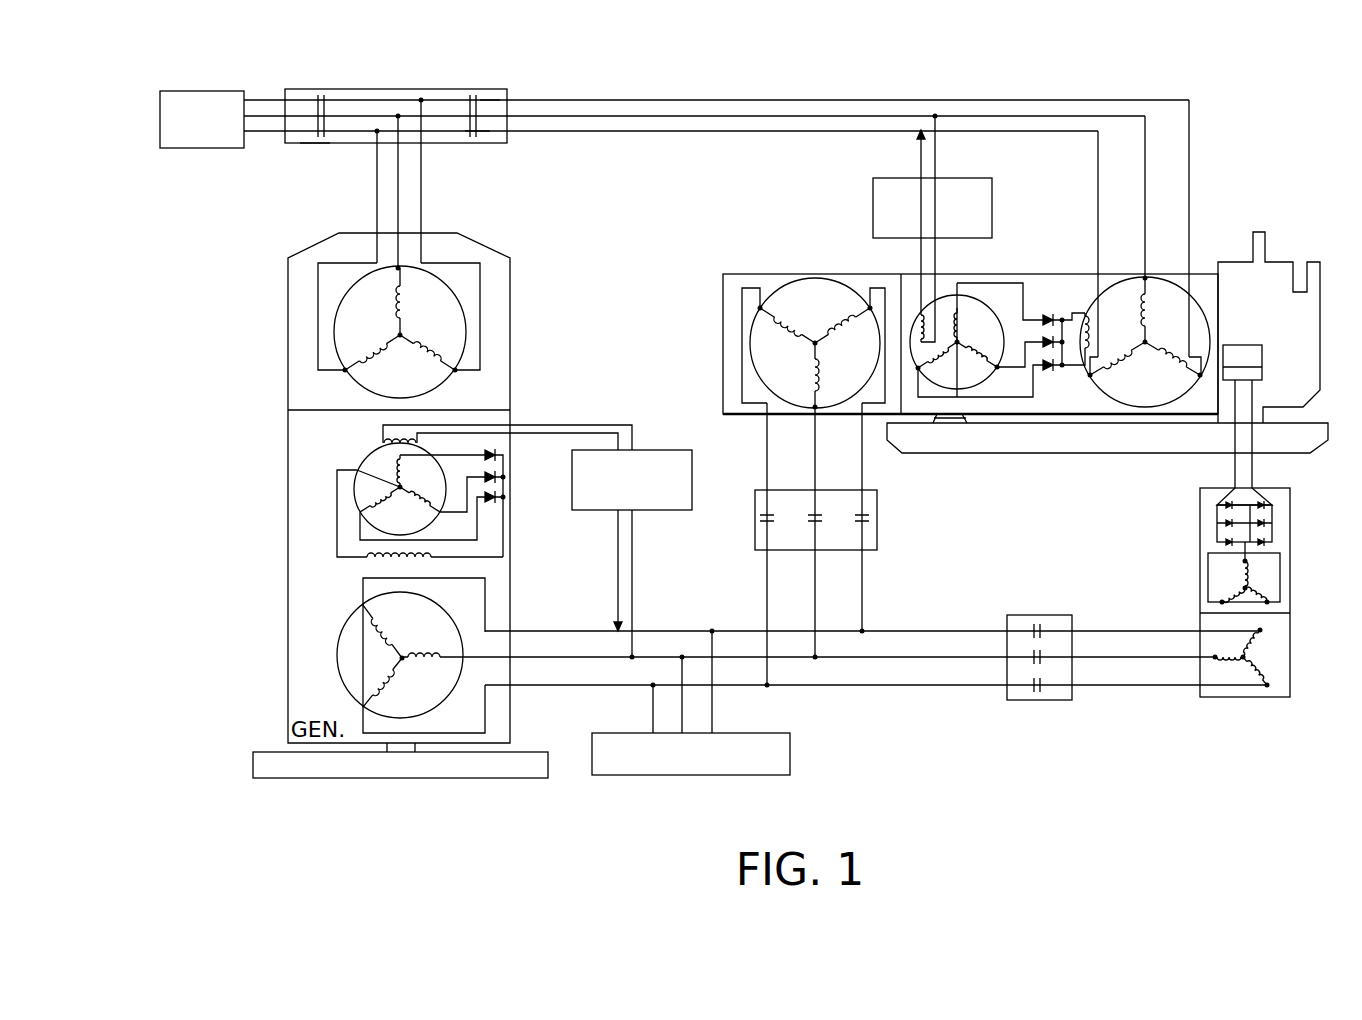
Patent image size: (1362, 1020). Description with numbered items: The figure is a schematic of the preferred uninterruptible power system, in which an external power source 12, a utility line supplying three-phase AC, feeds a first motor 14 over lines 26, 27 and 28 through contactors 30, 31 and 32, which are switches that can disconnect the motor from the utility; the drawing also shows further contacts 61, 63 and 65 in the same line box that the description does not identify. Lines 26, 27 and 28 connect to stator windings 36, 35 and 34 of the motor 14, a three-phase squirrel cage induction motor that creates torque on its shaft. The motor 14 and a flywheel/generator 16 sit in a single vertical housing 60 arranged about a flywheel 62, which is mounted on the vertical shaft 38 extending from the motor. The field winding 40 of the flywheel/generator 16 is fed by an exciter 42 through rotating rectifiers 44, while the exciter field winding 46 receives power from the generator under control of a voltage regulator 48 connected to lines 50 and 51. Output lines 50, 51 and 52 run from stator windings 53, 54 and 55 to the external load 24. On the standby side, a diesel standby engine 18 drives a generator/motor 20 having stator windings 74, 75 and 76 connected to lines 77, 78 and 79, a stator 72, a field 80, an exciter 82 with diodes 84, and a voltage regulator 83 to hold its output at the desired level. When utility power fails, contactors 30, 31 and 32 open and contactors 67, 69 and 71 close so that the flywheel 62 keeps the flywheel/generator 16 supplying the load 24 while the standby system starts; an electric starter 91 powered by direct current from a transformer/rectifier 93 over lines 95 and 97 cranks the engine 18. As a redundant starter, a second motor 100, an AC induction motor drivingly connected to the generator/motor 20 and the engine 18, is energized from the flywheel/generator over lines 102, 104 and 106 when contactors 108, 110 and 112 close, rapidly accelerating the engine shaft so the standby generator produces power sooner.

The external power source 12 is at (215, 91).
The first motor 14 is at (502, 250).
The flywheel/generator 16 is at (288, 495).
The standby engine 18 is at (1273, 260).
The generator/motor 20 is at (1025, 273).
The external load 24 is at (790, 755).
The line 26 is at (283, 99).
The line 27 is at (265, 117).
The line 28 is at (267, 133).
The contactor 30 is at (332, 89).
The contactor 31 is at (325, 130).
The contactor 32 is at (305, 143).
The stator winding 34 is at (412, 352).
The stator winding 35 is at (401, 301).
The stator winding 36 is at (382, 341).
The shaft 38 is at (412, 746).
The field winding 40 is at (367, 559).
The exciter 42 is at (353, 453).
The rectifiers 44 is at (514, 487).
The exciter field winding 46 is at (383, 432).
The voltage regulator 48 is at (692, 472).
The line 50 is at (540, 630).
The line 51 is at (590, 655).
The line 52 is at (548, 688).
The stator winding 53 is at (387, 631).
The stator winding 54 is at (423, 664).
The stator winding 55 is at (378, 680).
The housing 60 is at (510, 341).
The second circuit breaker 61 is at (470, 95).
The flywheel 62 is at (253, 763).
The breaker contact 63 is at (480, 108).
The breaker contact 65 is at (473, 138).
The contactor 67 is at (1035, 625).
The contactor 69 is at (1042, 655).
The contactor 71 is at (1030, 692).
The stator 72 is at (1108, 282).
The stator winding 74 is at (1149, 304).
The stator winding 75 is at (1162, 363).
The stator winding 76 is at (1125, 348).
The line 77 is at (1140, 160).
The line 78 is at (1187, 160).
The line 79 is at (1095, 168).
The field 80 is at (1088, 318).
The exciter 82 is at (975, 293).
The voltage regulator 83 is at (975, 178).
The diodes 84 is at (1043, 368).
The electric starter 91 is at (1263, 358).
The transformer/rectifier 93 is at (1290, 535).
The line 95 is at (1232, 462).
The line 97 is at (1255, 462).
The second motor 100 is at (722, 307).
The line 102 is at (764, 424).
The line 104 is at (817, 430).
The line 106 is at (862, 428).
The contactor 108 is at (763, 525).
The contactor 110 is at (810, 527).
The contactor 112 is at (877, 516).